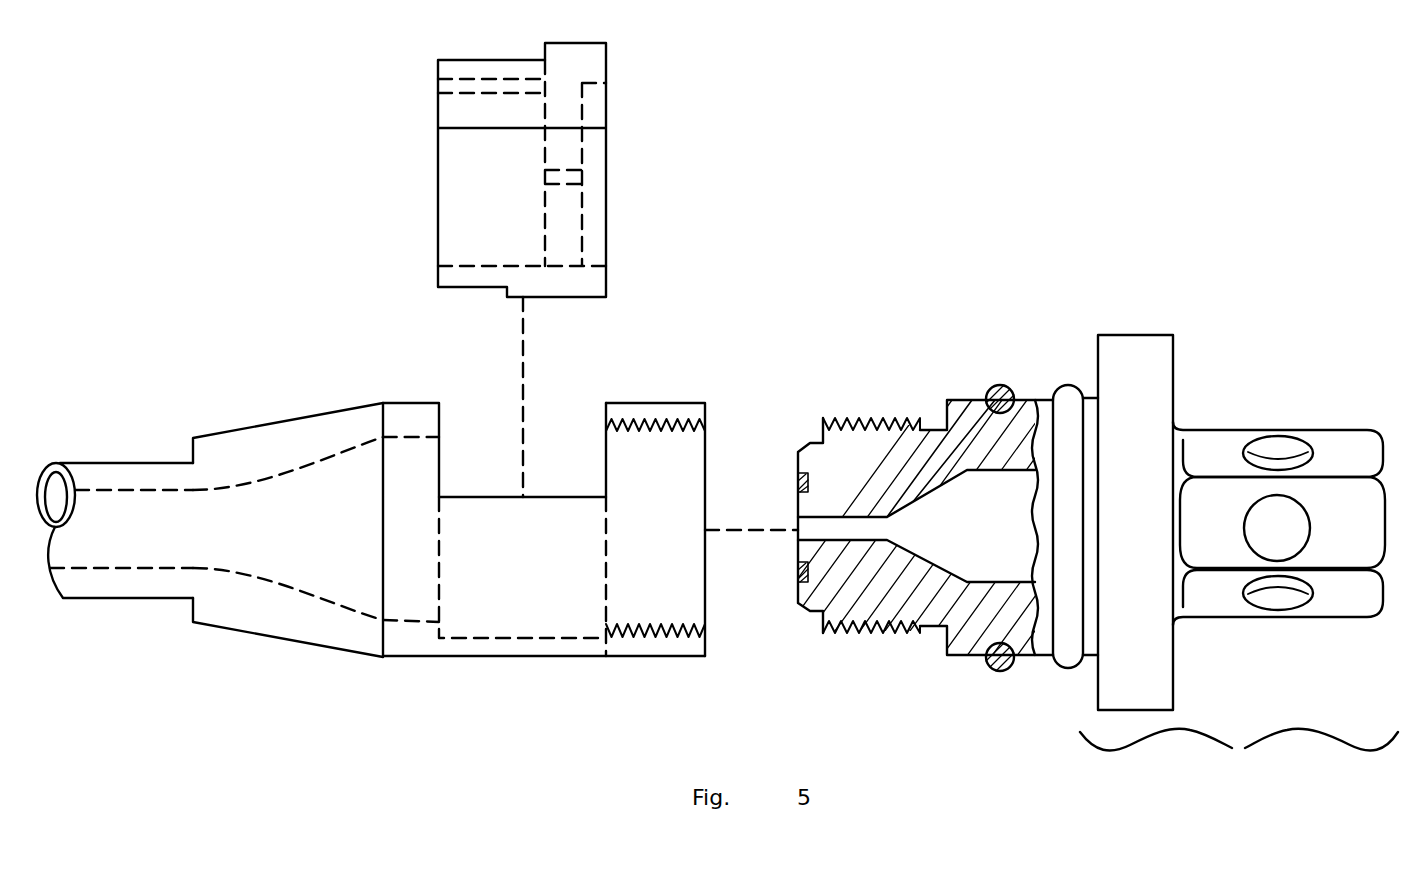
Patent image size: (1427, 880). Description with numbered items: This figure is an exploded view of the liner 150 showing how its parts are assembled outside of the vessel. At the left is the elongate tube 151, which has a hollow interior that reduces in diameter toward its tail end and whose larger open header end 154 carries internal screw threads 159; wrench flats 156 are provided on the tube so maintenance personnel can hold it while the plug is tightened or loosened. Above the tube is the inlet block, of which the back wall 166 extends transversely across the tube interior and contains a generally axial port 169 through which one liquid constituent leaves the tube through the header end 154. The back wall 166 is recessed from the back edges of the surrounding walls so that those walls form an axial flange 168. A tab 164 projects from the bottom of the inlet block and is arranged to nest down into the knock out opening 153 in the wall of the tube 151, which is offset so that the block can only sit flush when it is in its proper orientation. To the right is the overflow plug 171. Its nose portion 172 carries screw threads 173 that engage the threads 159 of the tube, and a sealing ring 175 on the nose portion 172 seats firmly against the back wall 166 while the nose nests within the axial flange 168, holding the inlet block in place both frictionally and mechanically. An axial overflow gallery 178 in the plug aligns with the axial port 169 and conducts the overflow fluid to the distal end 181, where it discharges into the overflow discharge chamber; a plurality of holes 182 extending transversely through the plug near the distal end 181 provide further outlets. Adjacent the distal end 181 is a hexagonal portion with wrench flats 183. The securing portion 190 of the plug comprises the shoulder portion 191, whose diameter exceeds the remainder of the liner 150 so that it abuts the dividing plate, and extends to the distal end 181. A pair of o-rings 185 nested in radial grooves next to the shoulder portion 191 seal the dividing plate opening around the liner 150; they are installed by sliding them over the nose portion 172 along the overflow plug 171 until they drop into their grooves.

The liner 150 is at (937, 309).
The elongate tube 151 is at (288, 632).
The knock out opening 153 is at (517, 655).
The header end 154 is at (708, 645).
The wrench flats 156 is at (173, 464).
The screw threads 159 is at (638, 427).
The tab 164 is at (532, 297).
The back wall 166 is at (582, 203).
The axial flange 168 is at (605, 267).
The axial port 169 is at (547, 175).
The overflow plug 171 is at (953, 657).
The nose portion 172 is at (800, 450).
The screw threads 173 is at (883, 637).
The sealing ring 175 is at (798, 585).
The axial overflow gallery 178 is at (965, 545).
The distal end 181 is at (1367, 618).
The holes 182 is at (1280, 448).
The wrench flats 183 is at (1326, 540).
The o-rings 185 is at (1060, 385).
The securing portion 190 is at (1239, 754).
The shoulder portion 191 is at (1157, 352).